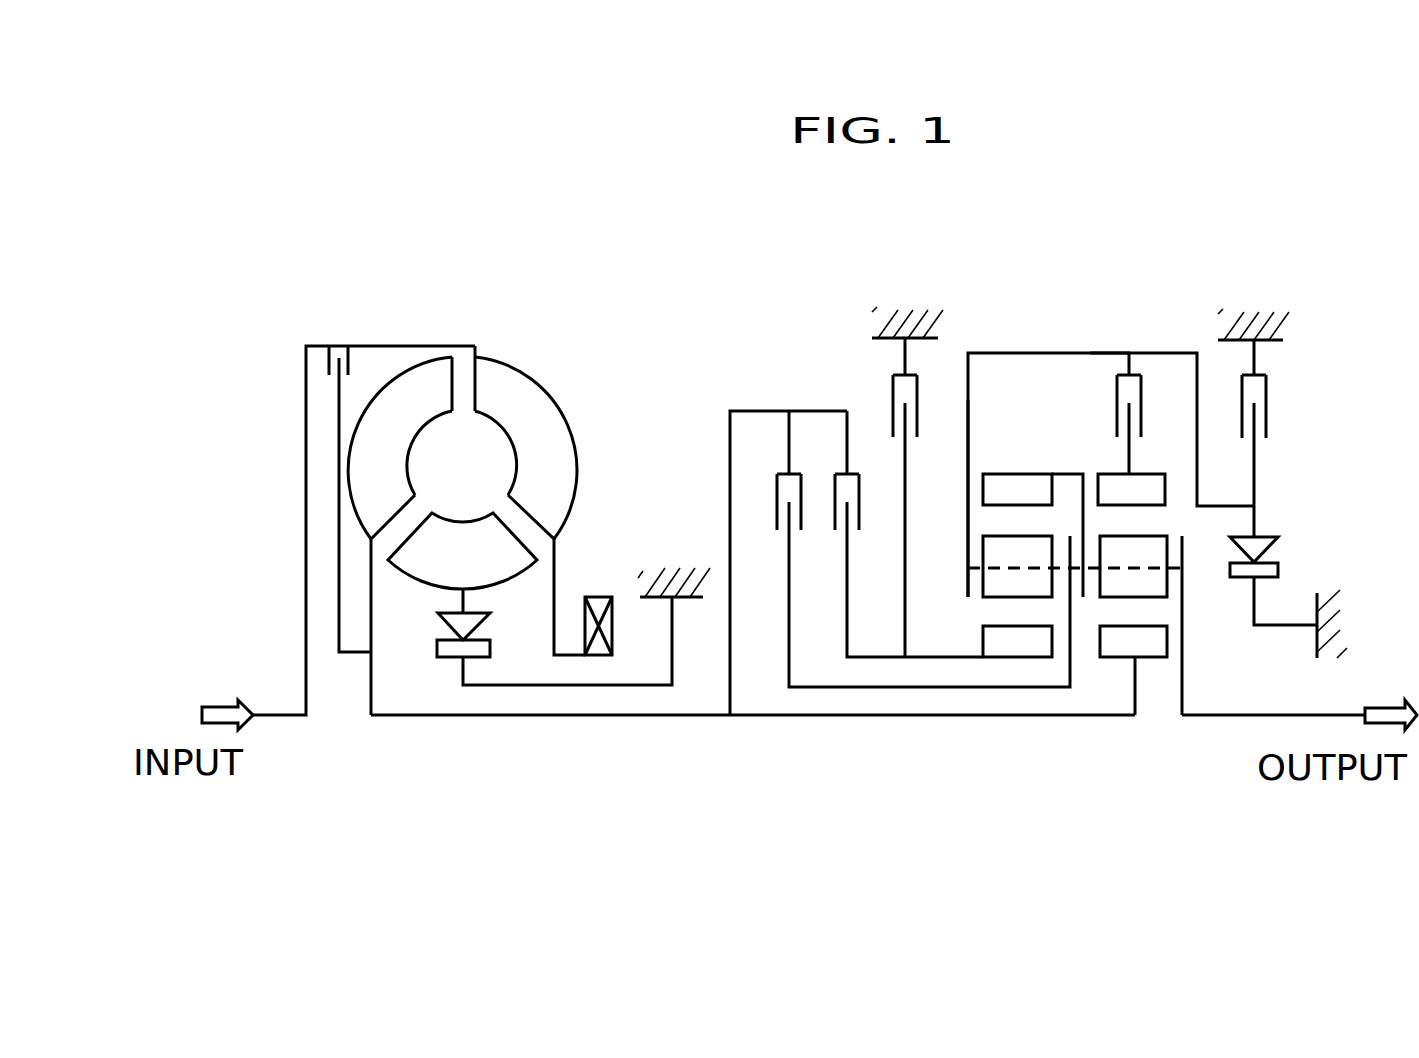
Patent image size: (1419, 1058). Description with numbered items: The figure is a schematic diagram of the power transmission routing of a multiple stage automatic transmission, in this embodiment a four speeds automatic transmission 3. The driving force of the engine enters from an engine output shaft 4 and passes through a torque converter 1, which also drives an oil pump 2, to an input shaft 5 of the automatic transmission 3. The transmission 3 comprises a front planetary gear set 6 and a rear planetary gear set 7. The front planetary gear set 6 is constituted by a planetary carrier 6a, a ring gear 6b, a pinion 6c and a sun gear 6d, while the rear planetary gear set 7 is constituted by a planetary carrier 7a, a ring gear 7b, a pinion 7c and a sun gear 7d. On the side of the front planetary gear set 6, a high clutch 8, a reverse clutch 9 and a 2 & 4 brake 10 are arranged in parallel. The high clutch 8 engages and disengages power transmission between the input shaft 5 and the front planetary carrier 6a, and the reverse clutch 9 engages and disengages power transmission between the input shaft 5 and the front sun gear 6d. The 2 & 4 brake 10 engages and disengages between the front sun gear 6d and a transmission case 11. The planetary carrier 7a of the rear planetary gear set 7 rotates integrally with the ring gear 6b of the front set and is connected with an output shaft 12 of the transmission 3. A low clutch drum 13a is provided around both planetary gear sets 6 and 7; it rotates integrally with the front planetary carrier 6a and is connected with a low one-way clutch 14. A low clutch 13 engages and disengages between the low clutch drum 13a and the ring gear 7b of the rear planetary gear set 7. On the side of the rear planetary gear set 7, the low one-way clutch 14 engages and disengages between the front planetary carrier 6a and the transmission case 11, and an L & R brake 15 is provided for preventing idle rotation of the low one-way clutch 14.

The torque converter 1 is at (446, 336).
The oil pump 2 is at (598, 597).
The four speeds automatic transmission 3 is at (1038, 303).
The engine output shaft 4 is at (285, 716).
The input shaft 5 is at (440, 717).
The front planetary gear set 6 is at (999, 477).
The planetary carrier 6a is at (968, 507).
The ring gear 6b is at (1035, 482).
The pinion 6c is at (983, 548).
The sun gear 6d is at (983, 630).
The rear planetary gear set 7 is at (1163, 547).
The planetary carrier 7a is at (1182, 598).
The ring gear 7b is at (1150, 482).
The pinion 7c is at (1147, 540).
The sun gear 7d is at (1153, 650).
The high clutch 8 is at (783, 474).
The reverse clutch 9 is at (840, 474).
The 2 & 4 brake 10 is at (888, 380).
The transmission case 11 is at (905, 307).
The output shaft 12 is at (1218, 715).
The low clutch 13 is at (1135, 375).
The low clutch drum 13a is at (1110, 353).
The low one-way clutch 14 is at (1260, 535).
The L & R brake 15 is at (1266, 388).